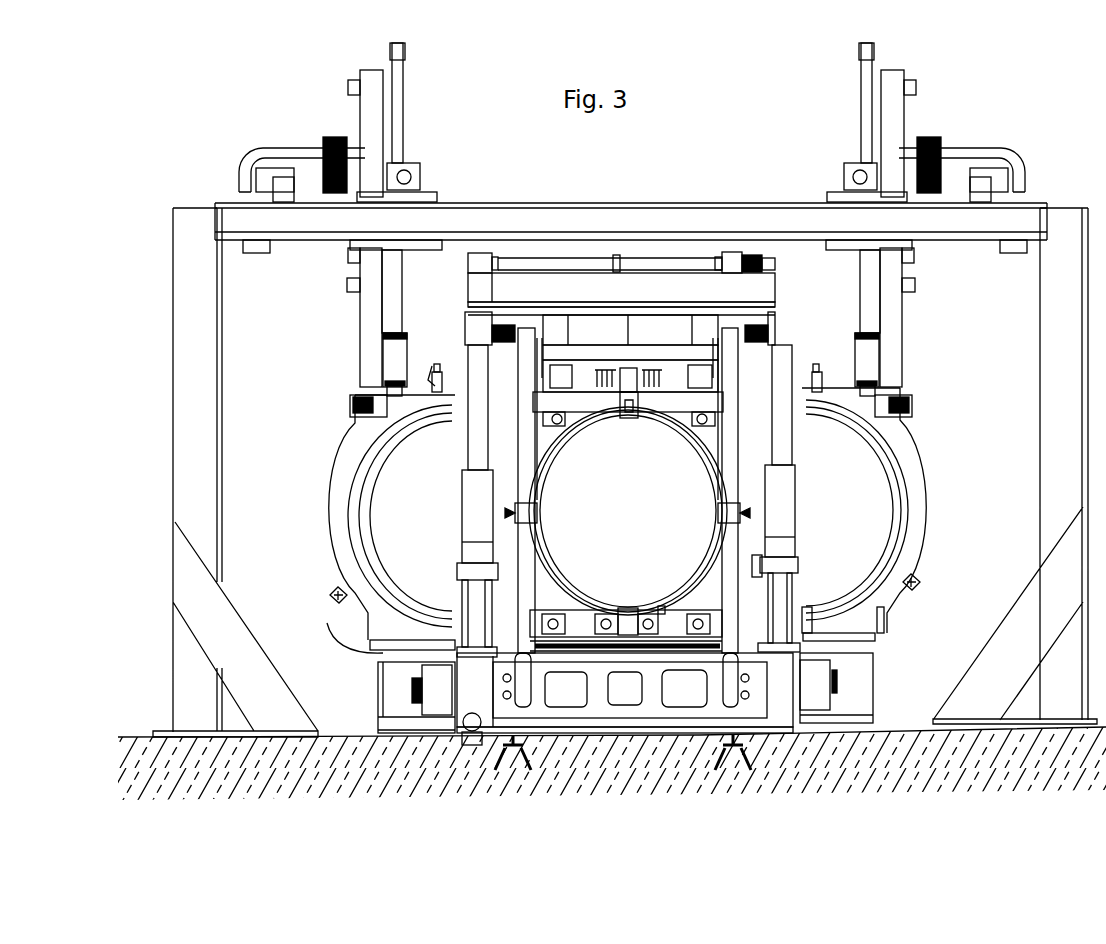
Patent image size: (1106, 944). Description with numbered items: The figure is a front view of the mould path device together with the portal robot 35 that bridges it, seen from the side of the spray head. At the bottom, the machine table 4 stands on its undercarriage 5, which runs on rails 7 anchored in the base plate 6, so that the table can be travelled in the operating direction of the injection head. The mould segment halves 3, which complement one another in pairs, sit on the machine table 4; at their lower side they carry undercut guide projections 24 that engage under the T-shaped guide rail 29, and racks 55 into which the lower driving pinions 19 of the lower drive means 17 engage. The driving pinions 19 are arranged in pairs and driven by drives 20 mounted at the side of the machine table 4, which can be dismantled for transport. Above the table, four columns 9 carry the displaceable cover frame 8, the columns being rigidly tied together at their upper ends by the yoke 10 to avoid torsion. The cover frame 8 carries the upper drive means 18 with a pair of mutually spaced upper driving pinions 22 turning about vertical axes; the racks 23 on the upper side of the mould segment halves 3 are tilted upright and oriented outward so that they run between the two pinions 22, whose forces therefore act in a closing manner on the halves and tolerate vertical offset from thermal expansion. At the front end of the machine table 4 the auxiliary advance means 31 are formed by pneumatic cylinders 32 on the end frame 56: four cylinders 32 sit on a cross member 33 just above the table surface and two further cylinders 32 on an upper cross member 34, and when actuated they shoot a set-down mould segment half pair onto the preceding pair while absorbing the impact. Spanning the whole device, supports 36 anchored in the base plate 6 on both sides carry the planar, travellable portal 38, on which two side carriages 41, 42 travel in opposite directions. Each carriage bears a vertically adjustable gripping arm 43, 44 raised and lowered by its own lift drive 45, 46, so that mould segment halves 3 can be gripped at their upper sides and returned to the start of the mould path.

The mould segment halves 3 is at (338, 497).
The machine table 4 is at (748, 650).
The undercarriage 5 is at (625, 697).
The base plate 6 is at (898, 740).
The rails 7 is at (500, 736).
The cover frame 8 is at (776, 322).
The columns 9 is at (470, 356).
The yoke 10 is at (776, 290).
The lower drive means 17 is at (600, 656).
The upper drive means 18 is at (644, 362).
The driving pinions 19 is at (648, 640).
The drives 20 is at (385, 688).
The upper driving pinions 22 is at (735, 370).
The racks 23 is at (836, 375).
The guide projections 24 is at (447, 650).
The guide rail 29 is at (626, 656).
The auxiliary advance means 31 is at (590, 620).
The pneumatic cylinders 32 is at (577, 412).
The cross member 33 is at (590, 632).
The upper cross member 34 is at (578, 410).
The portal robot 35 is at (1052, 165).
The supports 36 is at (1047, 388).
The portal 38 is at (550, 217).
The side carriage 41 is at (434, 184).
The side carriage 42 is at (847, 165).
The gripping arm 43 is at (368, 322).
The gripping arm 44 is at (888, 331).
The lift drive 45 is at (398, 300).
The lift drive 46 is at (882, 303).
The racks 55 is at (662, 610).
The end frame 56 is at (748, 565).